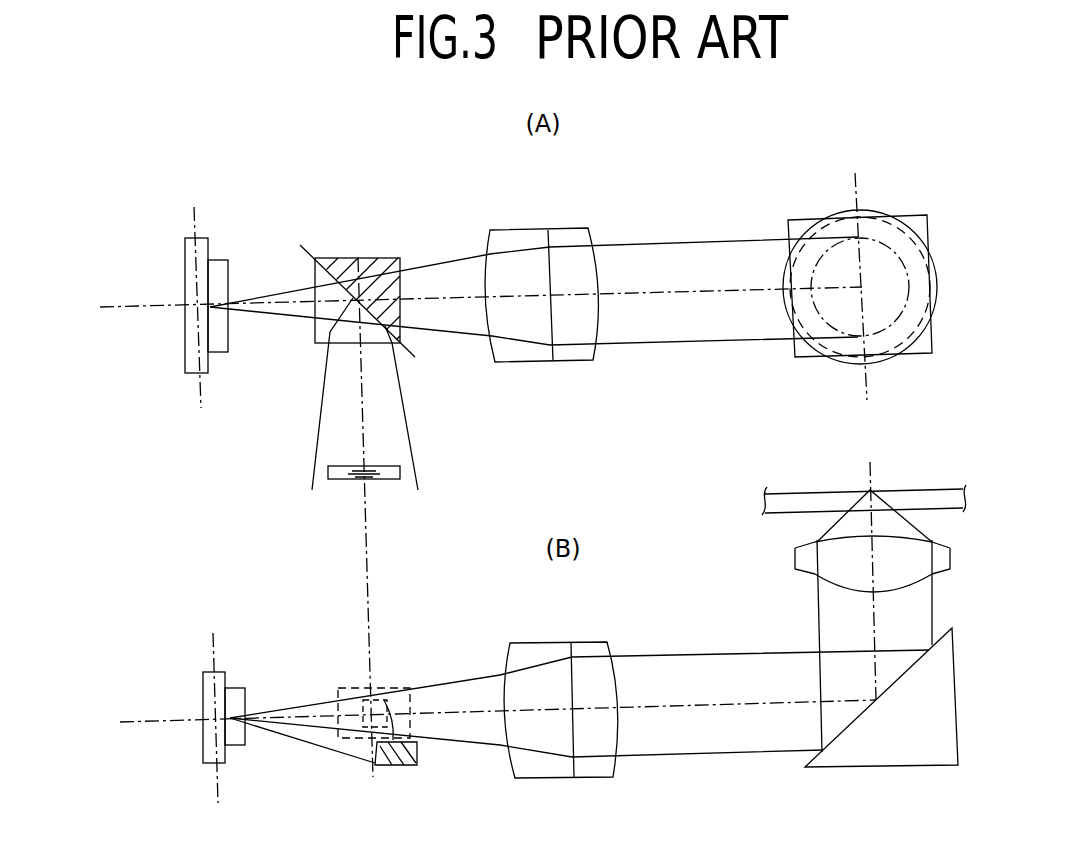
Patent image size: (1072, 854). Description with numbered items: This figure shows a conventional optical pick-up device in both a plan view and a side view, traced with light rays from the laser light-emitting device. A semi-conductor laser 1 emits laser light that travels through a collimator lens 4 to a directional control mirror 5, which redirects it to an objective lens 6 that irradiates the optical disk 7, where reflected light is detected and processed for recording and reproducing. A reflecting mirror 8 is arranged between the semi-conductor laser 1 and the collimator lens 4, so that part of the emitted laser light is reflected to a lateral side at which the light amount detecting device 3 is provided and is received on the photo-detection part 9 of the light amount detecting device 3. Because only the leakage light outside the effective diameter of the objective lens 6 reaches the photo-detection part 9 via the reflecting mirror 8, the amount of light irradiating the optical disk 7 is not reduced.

The semi-conductor laser 1 is at (186, 258).
The light amount detecting device 3 is at (330, 481).
The collimator lens 4 is at (572, 237).
The directional control mirror 5 is at (932, 333).
The objective lens 6 is at (885, 267).
The optical disk 7 is at (983, 478).
The reflecting mirror 8 is at (375, 258).
The photo-detection part 9 is at (370, 467).